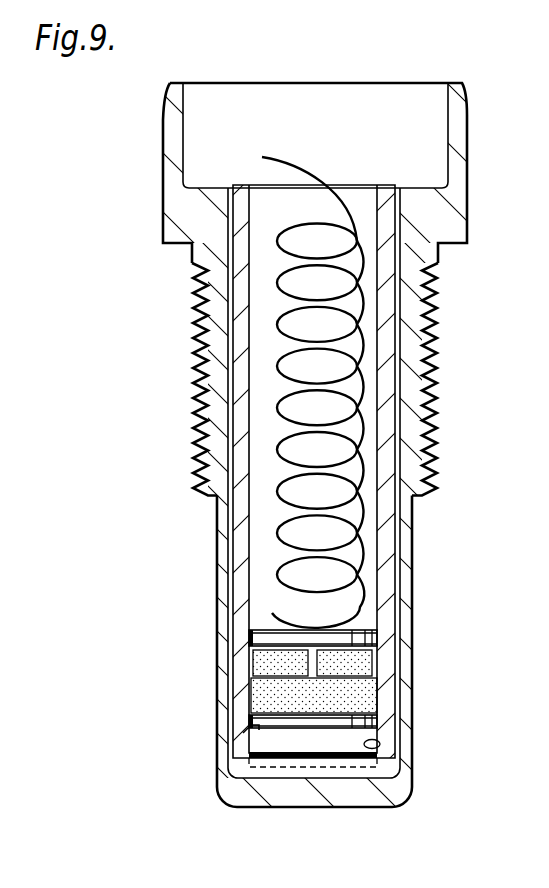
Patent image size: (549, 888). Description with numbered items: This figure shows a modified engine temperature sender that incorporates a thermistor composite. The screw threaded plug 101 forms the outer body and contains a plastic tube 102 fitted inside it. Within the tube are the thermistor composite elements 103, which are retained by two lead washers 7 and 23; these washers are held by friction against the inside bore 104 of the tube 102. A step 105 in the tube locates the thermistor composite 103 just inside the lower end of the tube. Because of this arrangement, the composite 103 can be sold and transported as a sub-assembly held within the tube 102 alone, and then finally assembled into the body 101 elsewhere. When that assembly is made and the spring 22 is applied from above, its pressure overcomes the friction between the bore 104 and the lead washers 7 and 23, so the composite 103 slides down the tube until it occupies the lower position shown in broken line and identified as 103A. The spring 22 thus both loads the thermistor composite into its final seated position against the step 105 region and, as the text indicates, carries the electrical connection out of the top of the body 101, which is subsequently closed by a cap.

The screw threaded plug 101 is at (423, 283).
The plastic tube 102 is at (387, 523).
The spring 22 is at (360, 420).
The lead washer 7 is at (250, 638).
The step 105 is at (378, 632).
The thermistor composite elements 103 is at (372, 700).
The inside bore 104 is at (380, 744).
The lead washer 23 is at (260, 728).
The composite in final position 103A is at (300, 728).